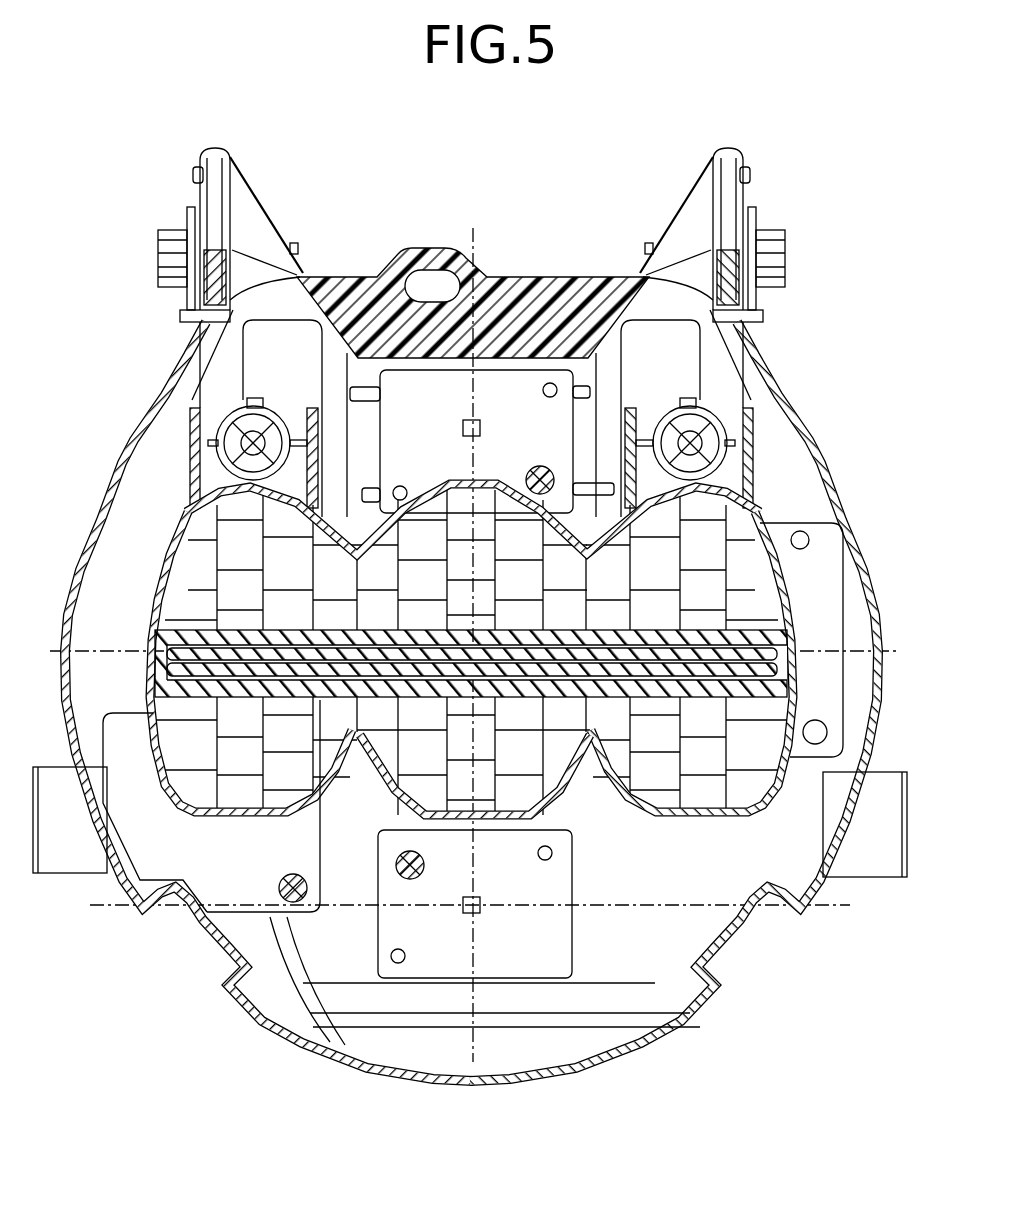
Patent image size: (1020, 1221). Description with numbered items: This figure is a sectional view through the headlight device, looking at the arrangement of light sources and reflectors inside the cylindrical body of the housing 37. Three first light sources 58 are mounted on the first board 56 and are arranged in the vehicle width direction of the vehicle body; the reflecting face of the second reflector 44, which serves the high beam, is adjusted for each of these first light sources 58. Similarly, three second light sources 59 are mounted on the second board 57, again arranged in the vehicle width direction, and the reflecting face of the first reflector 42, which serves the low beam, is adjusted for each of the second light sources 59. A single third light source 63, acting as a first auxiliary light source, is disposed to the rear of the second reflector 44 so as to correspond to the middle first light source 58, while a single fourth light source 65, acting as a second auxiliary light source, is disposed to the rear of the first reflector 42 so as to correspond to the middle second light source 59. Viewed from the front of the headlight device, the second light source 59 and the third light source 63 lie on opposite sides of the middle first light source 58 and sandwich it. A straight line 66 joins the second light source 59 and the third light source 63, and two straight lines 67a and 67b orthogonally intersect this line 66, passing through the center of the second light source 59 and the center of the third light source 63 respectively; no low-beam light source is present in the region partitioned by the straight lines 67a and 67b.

The housing 37 is at (773, 397).
The first reflector 42 is at (456, 512).
The second reflector 44 is at (197, 777).
The first board 56 is at (797, 684).
The second board 57 is at (790, 656).
The first light source 58 is at (252, 690).
The second light source 59 is at (233, 631).
The third light source (first auxiliary light source) 63 is at (468, 912).
The fourth light source (second auxiliary light source) 65 is at (462, 424).
The straight line 66 is at (483, 993).
The straight line 67a is at (903, 660).
The straight line 67b is at (840, 908).